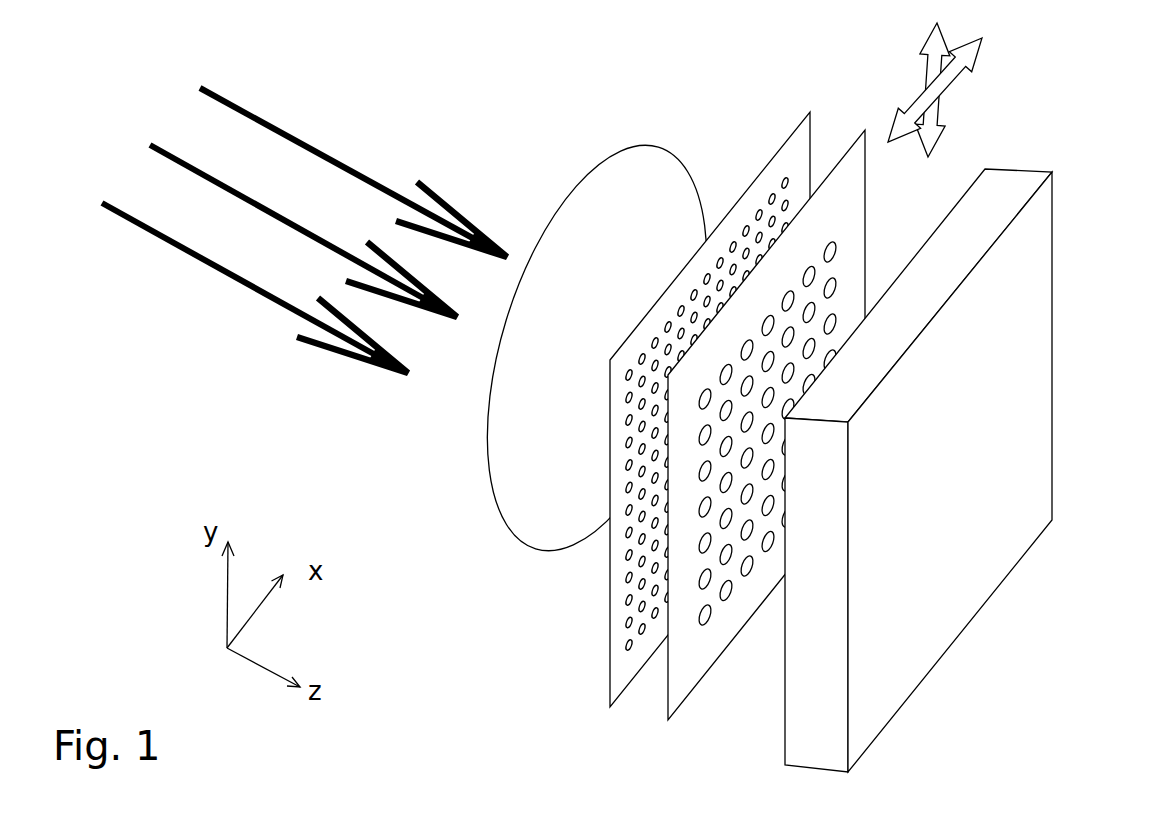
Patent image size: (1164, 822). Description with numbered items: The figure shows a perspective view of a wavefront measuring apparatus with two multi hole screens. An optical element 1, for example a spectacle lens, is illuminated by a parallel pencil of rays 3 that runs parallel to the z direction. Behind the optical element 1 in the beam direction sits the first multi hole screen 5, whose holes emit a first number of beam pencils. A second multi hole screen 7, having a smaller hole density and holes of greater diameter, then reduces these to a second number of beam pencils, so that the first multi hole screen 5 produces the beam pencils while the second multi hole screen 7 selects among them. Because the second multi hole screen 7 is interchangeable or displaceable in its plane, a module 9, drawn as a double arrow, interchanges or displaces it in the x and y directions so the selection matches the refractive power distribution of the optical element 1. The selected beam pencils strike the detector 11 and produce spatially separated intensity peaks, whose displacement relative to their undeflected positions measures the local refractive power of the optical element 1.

The optical element 1 is at (593, 208).
The parallel pencil of rays 3 is at (320, 140).
The first multi hole screen 5 is at (620, 570).
The second multi hole screen 7 is at (682, 672).
The module for interchange or displacement of the second multi hole screen 9 is at (952, 90).
The detector 11 is at (1023, 168).